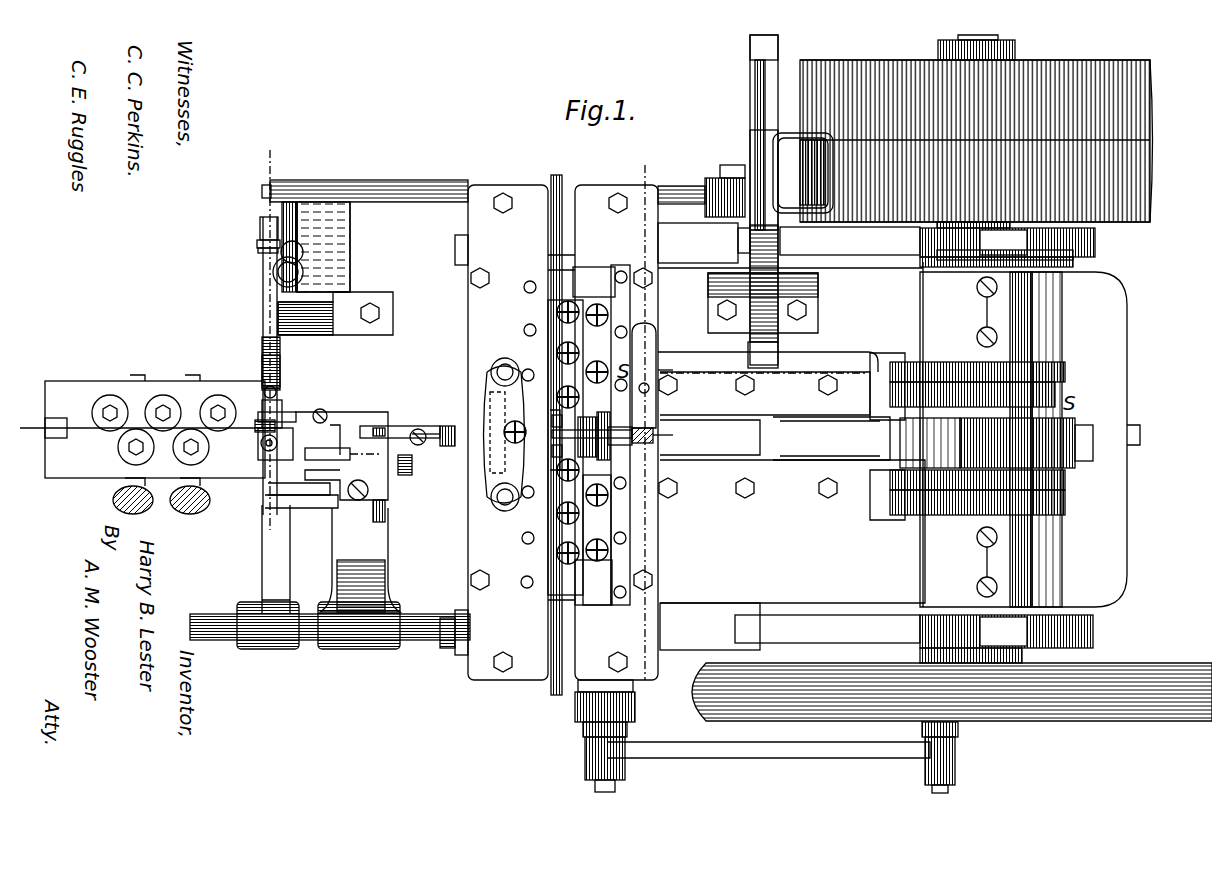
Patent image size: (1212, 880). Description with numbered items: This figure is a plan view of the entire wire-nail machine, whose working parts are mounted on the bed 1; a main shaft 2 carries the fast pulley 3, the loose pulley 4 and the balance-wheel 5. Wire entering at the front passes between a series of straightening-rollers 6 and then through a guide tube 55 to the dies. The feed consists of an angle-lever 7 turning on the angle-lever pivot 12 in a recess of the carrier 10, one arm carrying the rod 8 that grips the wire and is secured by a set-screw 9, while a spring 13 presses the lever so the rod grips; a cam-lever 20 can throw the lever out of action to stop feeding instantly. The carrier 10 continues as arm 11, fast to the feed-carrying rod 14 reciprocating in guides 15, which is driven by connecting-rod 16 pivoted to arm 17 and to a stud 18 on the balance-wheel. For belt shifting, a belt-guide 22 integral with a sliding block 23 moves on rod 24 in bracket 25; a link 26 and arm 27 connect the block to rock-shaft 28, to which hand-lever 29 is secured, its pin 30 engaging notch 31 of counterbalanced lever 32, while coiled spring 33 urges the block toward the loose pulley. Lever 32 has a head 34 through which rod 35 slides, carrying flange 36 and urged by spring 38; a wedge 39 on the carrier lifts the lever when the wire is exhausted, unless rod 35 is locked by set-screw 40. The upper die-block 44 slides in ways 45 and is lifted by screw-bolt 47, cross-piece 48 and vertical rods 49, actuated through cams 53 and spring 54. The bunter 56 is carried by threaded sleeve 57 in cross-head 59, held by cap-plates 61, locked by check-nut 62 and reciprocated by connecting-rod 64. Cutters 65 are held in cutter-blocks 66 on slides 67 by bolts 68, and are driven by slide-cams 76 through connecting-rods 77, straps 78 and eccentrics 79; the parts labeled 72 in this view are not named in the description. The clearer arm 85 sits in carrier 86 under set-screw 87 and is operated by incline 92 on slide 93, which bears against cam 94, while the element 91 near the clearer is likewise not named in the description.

The bed 1 is at (701, 413).
The main shaft 2 is at (976, 41).
The fast pulley 3 is at (1150, 176).
The loose pulley 4 is at (1150, 98).
The balance-wheel 5 is at (952, 692).
The straightening-rollers 6 is at (118, 402).
The angle-lever 7 is at (315, 508).
The rod 8 is at (370, 508).
The set-screw 9 is at (412, 462).
The carrier 10 is at (341, 454).
The arm 11 is at (360, 560).
The angle-lever pivot 12 is at (349, 486).
The spring 13 is at (299, 483).
The feed-carrying rod 14 is at (218, 640).
The guides 15 is at (272, 650).
The connecting-rod 16 is at (769, 750).
The arm 17 is at (635, 690).
The stud 18 is at (945, 793).
The cam-lever 20 is at (340, 450).
The belt-guide 22 is at (797, 133).
The sliding block 23 is at (764, 180).
The rod 24 is at (755, 100).
The bracket 25 is at (822, 283).
The link 26 is at (730, 166).
The arm 27 is at (720, 217).
The rock-shaft 28 is at (405, 186).
The hand-lever 29 is at (273, 274).
The pin 30 is at (258, 242).
The notch 31 is at (260, 251).
The lever 32 is at (265, 290).
The coiled spring 33 is at (778, 238).
The head 34 is at (276, 403).
The rod 35 is at (280, 344).
The flange 36 is at (260, 445).
The spring 38 is at (262, 360).
The wedge 39 is at (255, 426).
The set-screw 40 is at (276, 392).
The die-block 44 is at (544, 439).
The ways 45 is at (533, 433).
The screw-bolt 47 is at (508, 432).
The cross-piece 48 is at (488, 400).
The vertical rods 49 is at (488, 511).
The cams 53 is at (1063, 372).
The spring 54 is at (996, 443).
The guide tube 55 is at (447, 426).
The bunter 56 is at (552, 433).
The sleeve 57 is at (587, 441).
The cross-head 59 is at (710, 437).
The cap-plates 61 is at (765, 393).
The check-nut 62 is at (618, 428).
The connecting-rod 64 is at (831, 438).
The cutters 65 is at (552, 230).
The cutter-blocks 66 is at (583, 454).
The slides 67 is at (594, 436).
The bolts 68 is at (598, 306).
The plate 72 is at (557, 310).
The slide-cams 76 is at (600, 439).
The connecting-rods 77 is at (827, 435).
The straps 78 is at (1095, 240).
The eccentrics 79 is at (1073, 264).
The arm 85 is at (620, 442).
The carrier 86 is at (656, 340).
The set-screw 87 is at (648, 443).
The pin 91 is at (655, 393).
The incline 92 is at (670, 363).
The slide 93 is at (887, 436).
The cam 94 is at (1056, 396).